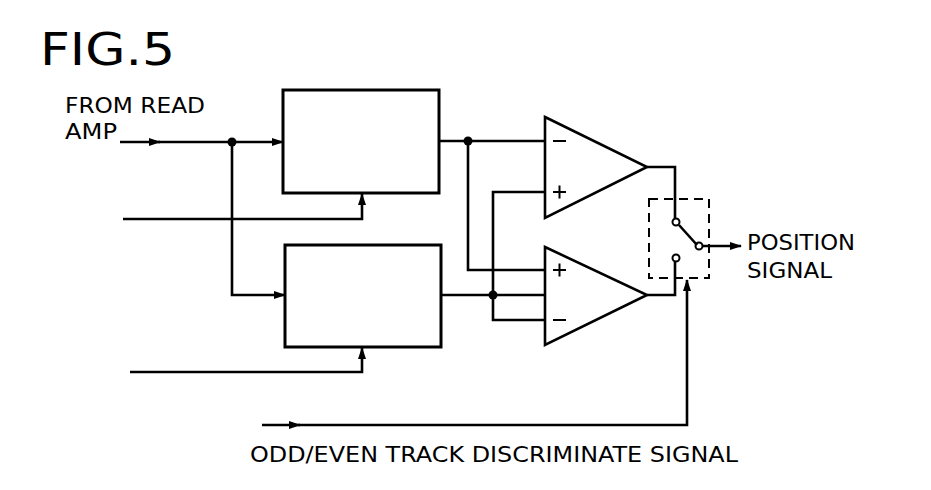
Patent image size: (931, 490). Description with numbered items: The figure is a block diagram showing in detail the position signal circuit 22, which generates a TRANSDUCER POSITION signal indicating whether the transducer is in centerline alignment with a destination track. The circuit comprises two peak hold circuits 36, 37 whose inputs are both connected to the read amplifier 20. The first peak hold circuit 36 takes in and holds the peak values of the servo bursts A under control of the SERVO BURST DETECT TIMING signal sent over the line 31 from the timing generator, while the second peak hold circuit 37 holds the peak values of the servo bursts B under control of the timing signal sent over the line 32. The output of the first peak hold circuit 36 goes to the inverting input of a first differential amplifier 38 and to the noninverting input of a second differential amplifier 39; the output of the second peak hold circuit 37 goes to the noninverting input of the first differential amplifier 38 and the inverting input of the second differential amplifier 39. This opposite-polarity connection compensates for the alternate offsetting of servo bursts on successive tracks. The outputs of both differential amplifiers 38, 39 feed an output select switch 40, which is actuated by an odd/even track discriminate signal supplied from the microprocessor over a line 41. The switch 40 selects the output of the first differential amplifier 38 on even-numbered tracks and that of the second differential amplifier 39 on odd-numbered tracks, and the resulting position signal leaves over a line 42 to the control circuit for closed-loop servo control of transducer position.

The read amplifier 20 is at (202, 205).
The position signal circuit 22 is at (531, 91).
The line 31 is at (182, 221).
The line 32 is at (180, 370).
The first peak hold circuit 36 is at (411, 195).
The second peak hold circuit 37 is at (424, 349).
The first differential amplifier 38 is at (598, 140).
The second differential amplifier 39 is at (606, 268).
The output select switch 40 is at (694, 198).
The line 41 is at (345, 423).
The line 42 is at (718, 250).